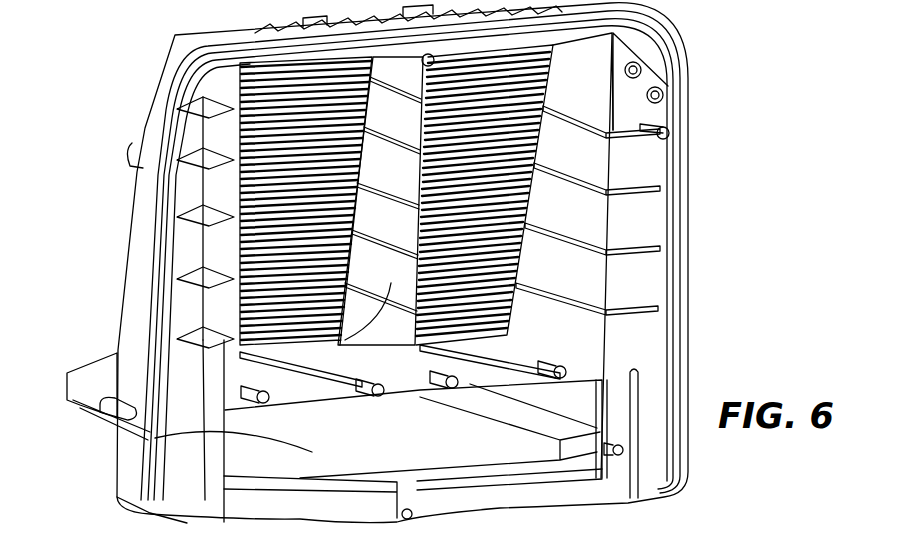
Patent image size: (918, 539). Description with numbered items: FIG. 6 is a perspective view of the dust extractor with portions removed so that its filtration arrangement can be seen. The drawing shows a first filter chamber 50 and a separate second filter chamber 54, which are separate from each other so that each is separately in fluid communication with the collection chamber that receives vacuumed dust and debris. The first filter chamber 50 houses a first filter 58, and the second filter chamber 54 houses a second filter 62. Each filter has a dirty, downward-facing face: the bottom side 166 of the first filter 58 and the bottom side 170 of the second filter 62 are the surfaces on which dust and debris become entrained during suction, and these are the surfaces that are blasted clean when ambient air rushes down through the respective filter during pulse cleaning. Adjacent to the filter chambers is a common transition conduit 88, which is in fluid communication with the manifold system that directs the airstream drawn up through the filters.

The first filter chamber 50 is at (300, 352).
The first filter 58 is at (300, 200).
The bottom side of the first filter 166 is at (200, 90).
The bottom side of the second filter 170 is at (535, 208).
The second filter 62 is at (533, 140).
The second filter chamber 54 is at (563, 260).
The common transition conduit 88 is at (243, 410).